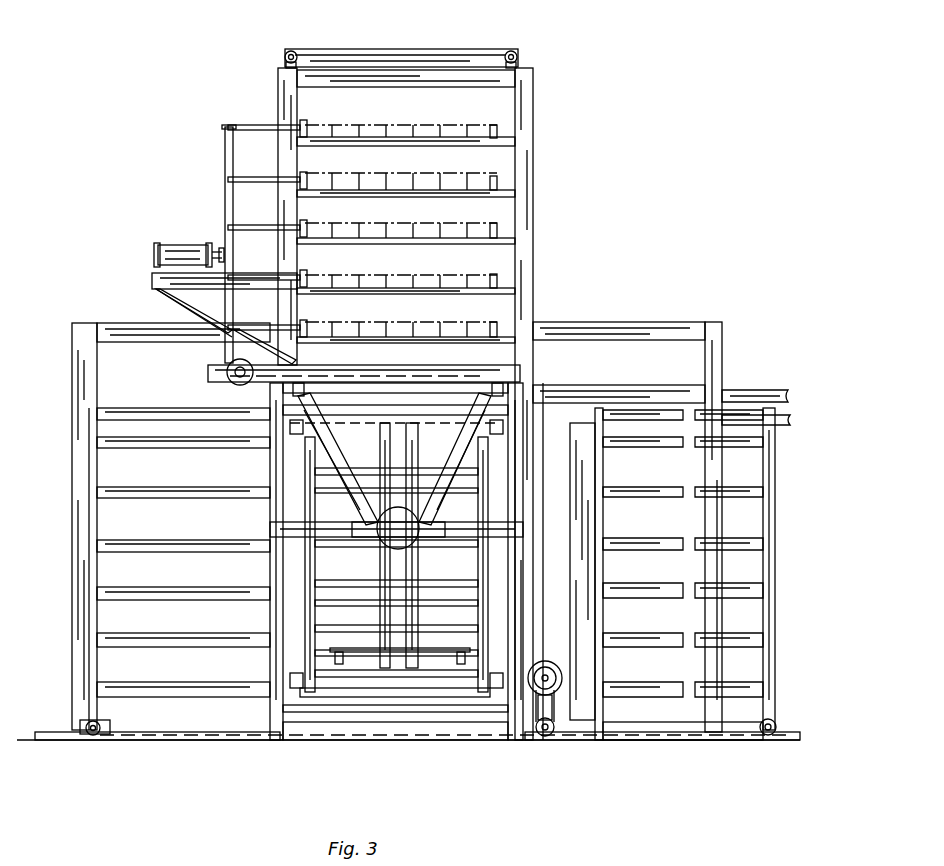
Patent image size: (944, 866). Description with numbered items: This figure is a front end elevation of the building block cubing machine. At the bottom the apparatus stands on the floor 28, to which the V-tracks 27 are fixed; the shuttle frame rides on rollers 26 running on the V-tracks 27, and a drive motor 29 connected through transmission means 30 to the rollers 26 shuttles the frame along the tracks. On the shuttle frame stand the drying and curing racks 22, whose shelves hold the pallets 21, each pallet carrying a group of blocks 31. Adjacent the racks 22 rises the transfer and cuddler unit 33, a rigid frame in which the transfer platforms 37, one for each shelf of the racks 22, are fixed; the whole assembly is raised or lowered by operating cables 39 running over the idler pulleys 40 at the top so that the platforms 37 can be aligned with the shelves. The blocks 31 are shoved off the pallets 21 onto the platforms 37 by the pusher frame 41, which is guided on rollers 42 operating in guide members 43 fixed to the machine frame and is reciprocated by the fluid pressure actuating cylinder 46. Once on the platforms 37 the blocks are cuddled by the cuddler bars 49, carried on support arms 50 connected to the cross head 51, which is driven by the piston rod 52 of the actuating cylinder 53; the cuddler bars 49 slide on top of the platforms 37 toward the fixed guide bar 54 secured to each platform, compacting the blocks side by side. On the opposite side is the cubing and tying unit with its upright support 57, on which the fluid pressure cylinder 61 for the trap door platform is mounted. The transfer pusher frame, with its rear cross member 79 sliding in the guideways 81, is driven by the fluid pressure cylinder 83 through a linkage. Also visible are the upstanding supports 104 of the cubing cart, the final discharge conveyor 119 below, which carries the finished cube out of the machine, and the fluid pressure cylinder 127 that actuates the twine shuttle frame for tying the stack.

The pallets 21 is at (204, 540).
The drying and curing racks 22 is at (72, 436).
The rollers 26 is at (92, 736).
The V-tracks 27 is at (170, 738).
The floor 28 is at (28, 736).
The drive motor 29 is at (528, 662).
The transmission means 30 is at (554, 736).
The blocks 31 is at (435, 125).
The transfer and cuddler unit 33 is at (548, 108).
The transfer platforms 37 is at (380, 143).
The operating cables 39 is at (410, 49).
The idler pulleys 40 is at (291, 50).
The pusher frame 41 is at (314, 562).
The rollers 42 is at (294, 434).
The guide members 43 is at (290, 428).
The fluid pressure actuating cylinder 46 is at (416, 546).
The cuddler bars 49 is at (307, 175).
The support arms 50 is at (258, 130).
The cross head 51 is at (225, 125).
The piston rod 52 is at (212, 243).
The actuating cylinder 53 is at (178, 243).
The fixed guide bar 54 is at (497, 133).
The upright support 57 is at (722, 334).
The fluid pressure cylinder 61 is at (758, 386).
The rear cross member 79 is at (418, 386).
The guideways 81 is at (304, 392).
The fluid pressure cylinder 83 is at (236, 382).
The upstanding supports 104 is at (578, 556).
The final discharge conveyor 119 is at (368, 700).
The fluid pressure cylinder 127 is at (786, 418).